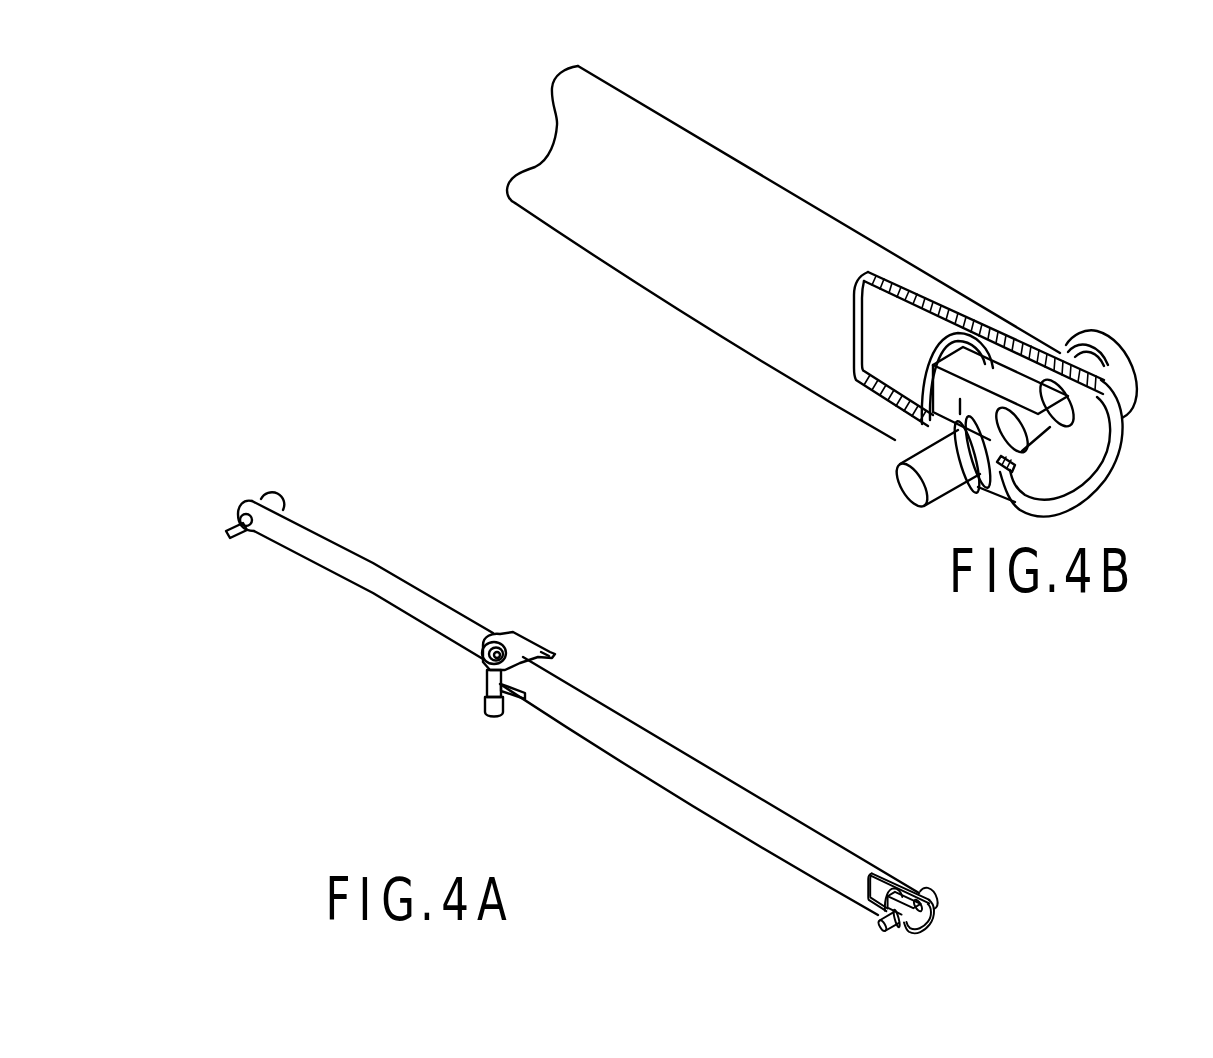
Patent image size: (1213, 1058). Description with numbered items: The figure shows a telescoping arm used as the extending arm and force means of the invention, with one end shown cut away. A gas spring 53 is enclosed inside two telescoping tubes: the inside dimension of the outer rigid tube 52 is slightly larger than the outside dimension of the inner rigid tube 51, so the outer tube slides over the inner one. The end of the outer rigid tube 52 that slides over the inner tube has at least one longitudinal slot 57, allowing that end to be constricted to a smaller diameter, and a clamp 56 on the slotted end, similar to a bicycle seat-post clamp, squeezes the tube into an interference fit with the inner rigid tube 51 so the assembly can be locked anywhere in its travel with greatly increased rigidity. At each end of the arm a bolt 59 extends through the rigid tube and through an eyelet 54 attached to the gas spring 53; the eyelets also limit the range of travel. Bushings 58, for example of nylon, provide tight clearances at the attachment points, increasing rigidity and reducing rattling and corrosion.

In FIG. 4A, the inner rigid tube 51 is at (353, 578).
In FIG. 4B, the outer rigid tube 52 is at (697, 203).
In FIG. 4A, the outer rigid tube 52 is at (672, 767).
In FIG. 4B, the gas spring 53 is at (887, 328).
In FIG. 4A, the gas spring 53 is at (880, 890).
In FIG. 4B, the eyelet 54 is at (1038, 418).
In FIG. 4A, the eyelet 54 is at (927, 912).
In FIG. 4A, the clamp 56 is at (545, 647).
In FIG. 4A, the longitudinal slot 57 is at (522, 692).
In FIG. 4B, the bushing 58 is at (940, 433).
In FIG. 4A, the bushing 58 is at (880, 913).
In FIG. 4B, the bolt 59 is at (1103, 350).
In FIG. 4A, the bolt 59 is at (933, 893).